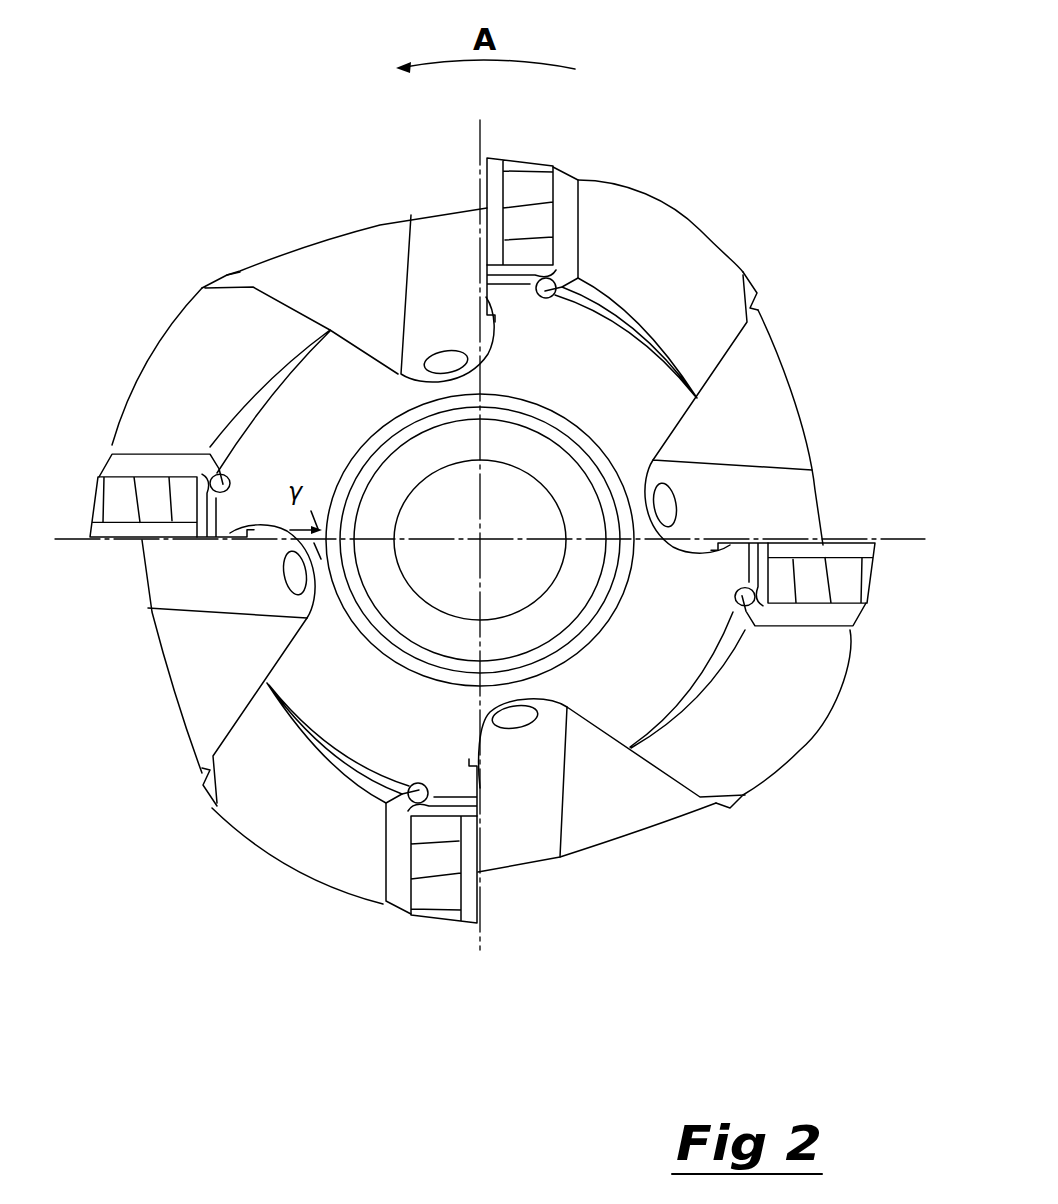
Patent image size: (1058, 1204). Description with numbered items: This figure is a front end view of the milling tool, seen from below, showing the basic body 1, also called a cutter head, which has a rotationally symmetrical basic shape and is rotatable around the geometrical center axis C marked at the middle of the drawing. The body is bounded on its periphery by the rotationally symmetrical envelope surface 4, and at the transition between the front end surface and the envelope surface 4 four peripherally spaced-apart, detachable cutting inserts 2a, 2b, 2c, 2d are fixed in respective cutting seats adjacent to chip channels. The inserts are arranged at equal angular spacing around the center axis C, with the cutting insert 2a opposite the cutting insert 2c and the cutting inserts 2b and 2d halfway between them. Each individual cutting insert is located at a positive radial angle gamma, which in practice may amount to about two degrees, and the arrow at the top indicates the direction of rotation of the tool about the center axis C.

The basic body 1 is at (212, 842).
The cutting insert 2a is at (883, 577).
The cutting insert 2b is at (440, 932).
The cutting insert 2c is at (95, 486).
The cutting insert 2d is at (526, 152).
The envelope surface 4 is at (822, 720).
The center axis C is at (488, 527).